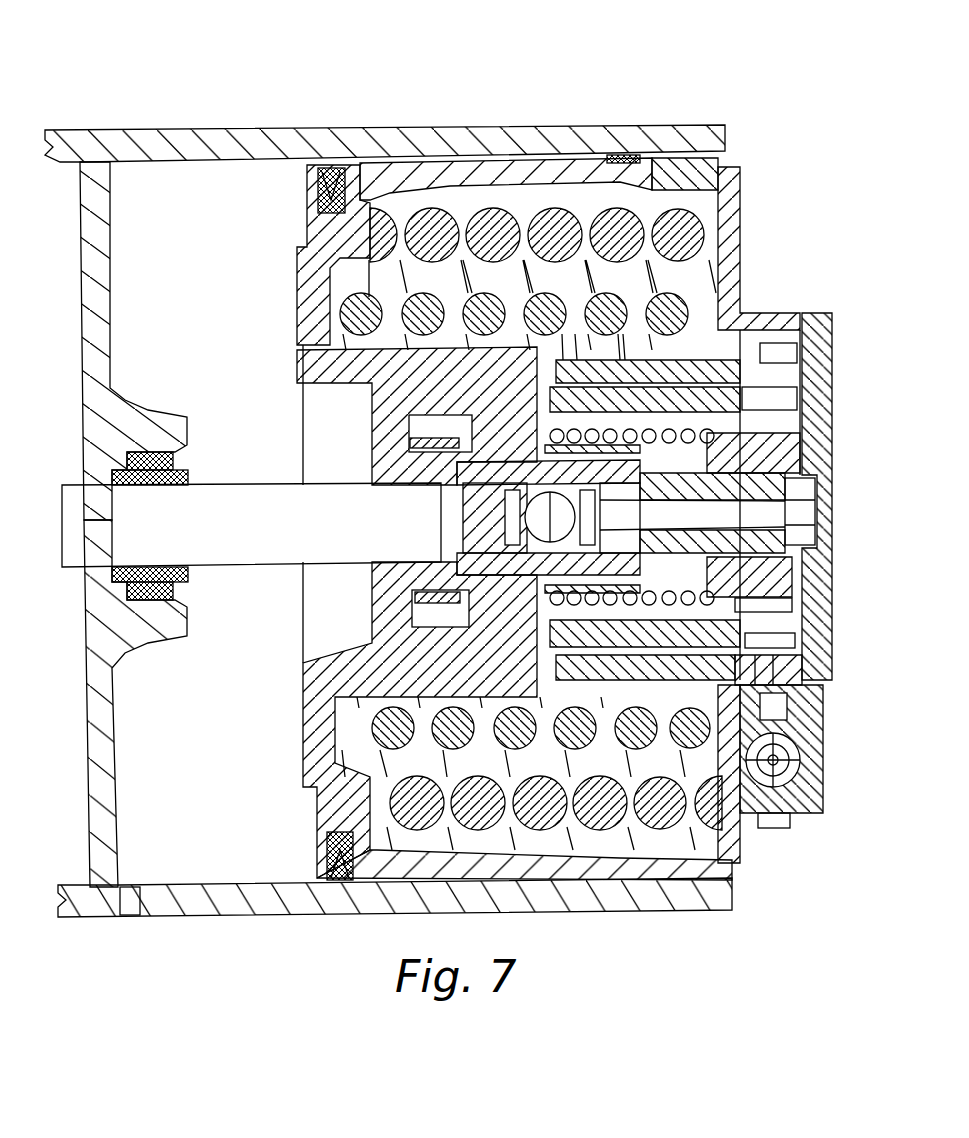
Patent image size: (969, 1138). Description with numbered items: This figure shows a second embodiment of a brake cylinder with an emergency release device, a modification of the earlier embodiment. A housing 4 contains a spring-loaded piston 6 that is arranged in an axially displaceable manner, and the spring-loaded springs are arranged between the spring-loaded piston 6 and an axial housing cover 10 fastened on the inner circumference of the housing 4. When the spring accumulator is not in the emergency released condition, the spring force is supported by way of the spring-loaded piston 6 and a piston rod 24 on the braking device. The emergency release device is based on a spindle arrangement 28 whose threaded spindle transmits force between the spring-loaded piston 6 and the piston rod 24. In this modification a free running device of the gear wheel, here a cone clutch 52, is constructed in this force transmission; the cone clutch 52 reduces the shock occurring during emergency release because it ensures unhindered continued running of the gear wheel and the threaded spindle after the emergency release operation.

The housing 4 is at (627, 145).
The spring-loaded piston 6 is at (475, 175).
The housing cover 10 is at (728, 203).
The piston rod 24 is at (223, 515).
The spindle arrangement 28 is at (758, 473).
The cone clutch 52 is at (300, 345).